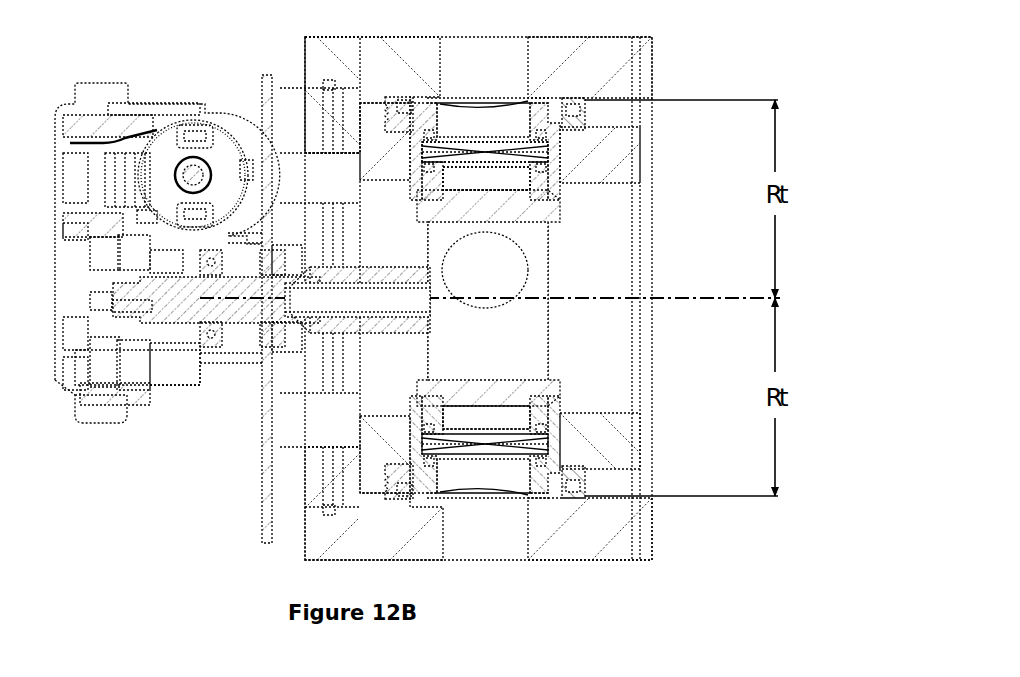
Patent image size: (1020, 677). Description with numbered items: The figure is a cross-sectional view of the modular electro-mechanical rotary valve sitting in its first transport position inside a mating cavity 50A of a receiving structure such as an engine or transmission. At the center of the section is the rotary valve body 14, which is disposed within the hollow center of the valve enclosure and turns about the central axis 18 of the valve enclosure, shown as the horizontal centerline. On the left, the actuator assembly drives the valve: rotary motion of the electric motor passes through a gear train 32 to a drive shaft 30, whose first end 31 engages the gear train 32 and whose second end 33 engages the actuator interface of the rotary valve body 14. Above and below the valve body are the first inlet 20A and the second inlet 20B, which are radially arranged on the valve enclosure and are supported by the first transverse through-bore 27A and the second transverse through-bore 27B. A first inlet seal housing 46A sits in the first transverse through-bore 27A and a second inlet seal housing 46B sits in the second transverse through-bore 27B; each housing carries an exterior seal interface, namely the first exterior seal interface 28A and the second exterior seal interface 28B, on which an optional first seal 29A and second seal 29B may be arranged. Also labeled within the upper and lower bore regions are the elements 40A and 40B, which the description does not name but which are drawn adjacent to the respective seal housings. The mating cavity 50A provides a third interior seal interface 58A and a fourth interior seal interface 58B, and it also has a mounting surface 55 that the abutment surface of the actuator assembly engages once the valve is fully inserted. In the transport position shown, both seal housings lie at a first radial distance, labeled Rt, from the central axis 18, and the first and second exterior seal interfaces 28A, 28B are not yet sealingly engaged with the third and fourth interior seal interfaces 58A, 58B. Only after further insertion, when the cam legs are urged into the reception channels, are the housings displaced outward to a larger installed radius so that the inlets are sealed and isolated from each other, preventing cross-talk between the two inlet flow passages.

The rotary valve body 14 is at (558, 215).
The central axis 18 is at (693, 298).
The first inlet 20A is at (430, 100).
The second inlet 20B is at (425, 500).
The first transverse through-bore 27A is at (588, 98).
The second transverse through-bore 27B is at (577, 478).
The first exterior seal interface 28A is at (395, 120).
The second exterior seal interface 28B is at (390, 488).
The first seal 29A is at (575, 108).
The second seal 29B is at (570, 500).
The drive shaft 30 is at (197, 310).
The first end of the drive shaft 31 is at (140, 303).
The gear train 32 is at (130, 328).
The second end of the drive shaft 33 is at (298, 305).
The upper bearing inner ring 40A is at (545, 195).
The lower bearing inner ring 40B is at (545, 402).
The first inlet seal housing 46A is at (560, 130).
The second inlet seal housing 46B is at (567, 478).
The mating cavity 50A is at (640, 527).
The mounting surface 55 is at (305, 52).
The third interior seal interface 58A is at (370, 108).
The fourth interior seal interface 58B is at (387, 495).